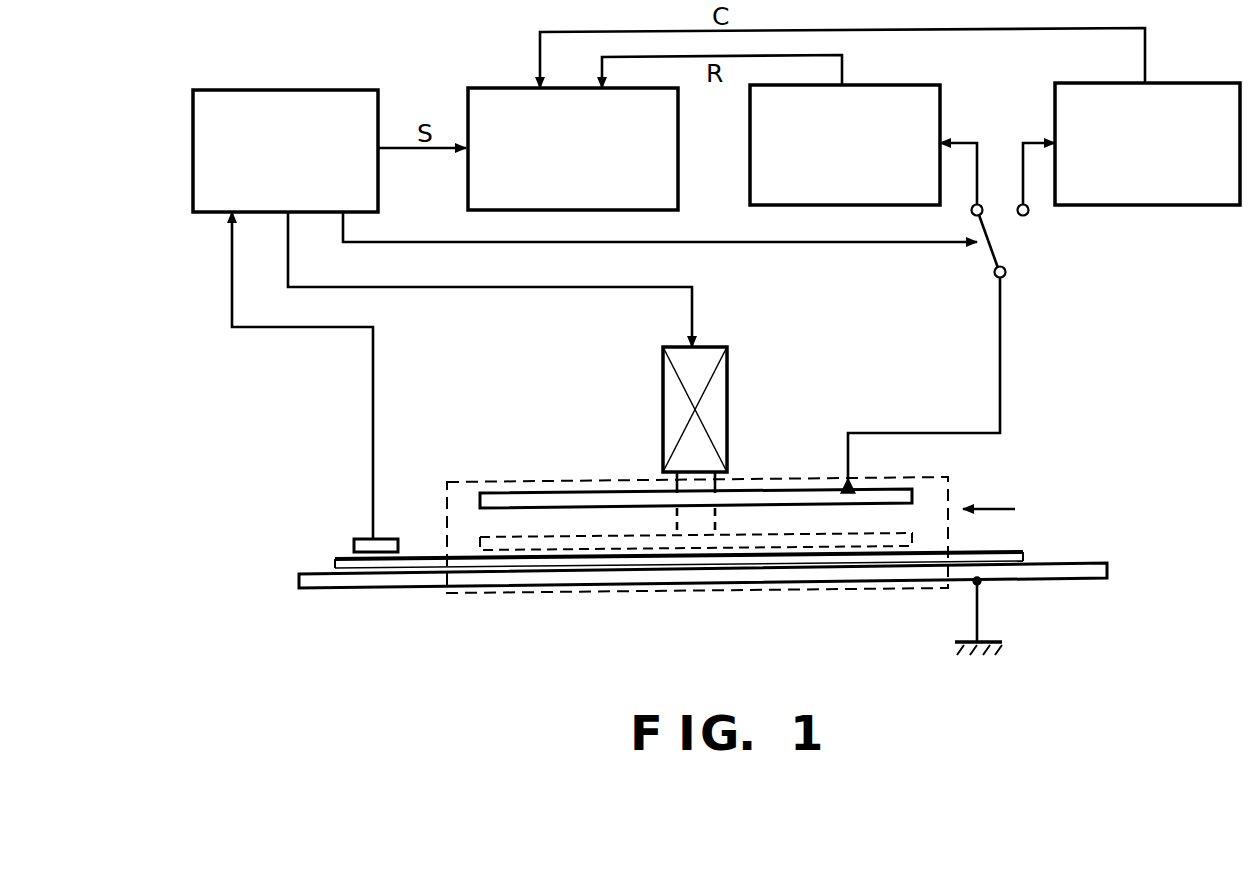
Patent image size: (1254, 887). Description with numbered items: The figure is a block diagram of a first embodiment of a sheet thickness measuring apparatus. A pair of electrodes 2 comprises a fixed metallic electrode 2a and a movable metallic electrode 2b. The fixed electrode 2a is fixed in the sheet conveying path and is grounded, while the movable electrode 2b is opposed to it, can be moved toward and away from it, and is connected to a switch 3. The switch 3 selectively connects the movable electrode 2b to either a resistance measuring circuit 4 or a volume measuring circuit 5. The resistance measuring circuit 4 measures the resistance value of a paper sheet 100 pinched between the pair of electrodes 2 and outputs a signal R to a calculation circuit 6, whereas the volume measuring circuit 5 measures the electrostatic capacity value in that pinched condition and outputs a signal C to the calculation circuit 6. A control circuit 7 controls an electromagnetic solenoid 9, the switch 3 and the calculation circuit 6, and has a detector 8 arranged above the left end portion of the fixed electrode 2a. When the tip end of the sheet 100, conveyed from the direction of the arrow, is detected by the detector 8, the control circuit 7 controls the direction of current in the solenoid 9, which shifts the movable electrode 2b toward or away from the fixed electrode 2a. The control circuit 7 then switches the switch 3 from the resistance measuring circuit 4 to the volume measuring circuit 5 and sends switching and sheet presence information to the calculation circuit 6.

The control circuit 7 is at (323, 90).
The calculation circuit 6 is at (519, 88).
The resistance measuring circuit 4 is at (885, 85).
The volume measuring circuit 5 is at (1185, 83).
The switch 3 is at (1008, 270).
The electromagnetic solenoid 9 is at (727, 405).
The movable metallic electrode 2b is at (560, 492).
The pair of electrodes 2 is at (621, 594).
The detector 8 is at (354, 540).
The paper sheet 100 is at (1012, 552).
The fixed metallic electrode 2a is at (379, 590).